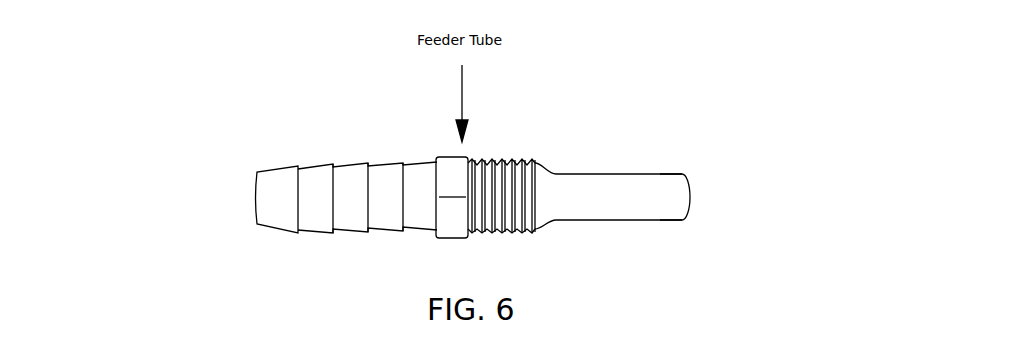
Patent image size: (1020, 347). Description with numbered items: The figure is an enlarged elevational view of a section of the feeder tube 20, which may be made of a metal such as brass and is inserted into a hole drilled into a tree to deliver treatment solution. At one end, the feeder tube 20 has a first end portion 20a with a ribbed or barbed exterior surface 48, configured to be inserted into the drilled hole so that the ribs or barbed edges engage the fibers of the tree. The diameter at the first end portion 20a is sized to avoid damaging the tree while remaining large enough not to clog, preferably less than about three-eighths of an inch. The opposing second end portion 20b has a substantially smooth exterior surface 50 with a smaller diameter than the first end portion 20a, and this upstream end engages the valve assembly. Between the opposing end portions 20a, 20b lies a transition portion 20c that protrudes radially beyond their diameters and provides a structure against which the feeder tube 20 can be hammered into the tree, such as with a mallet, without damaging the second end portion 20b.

The feeder tube 20 is at (582, 123).
The first end portion 20a is at (262, 243).
The second end portion 20b is at (666, 232).
The transition portion 20c is at (458, 243).
The ribbed or barbed exterior surface 48 is at (349, 167).
The smooth exterior surface 50 is at (635, 190).